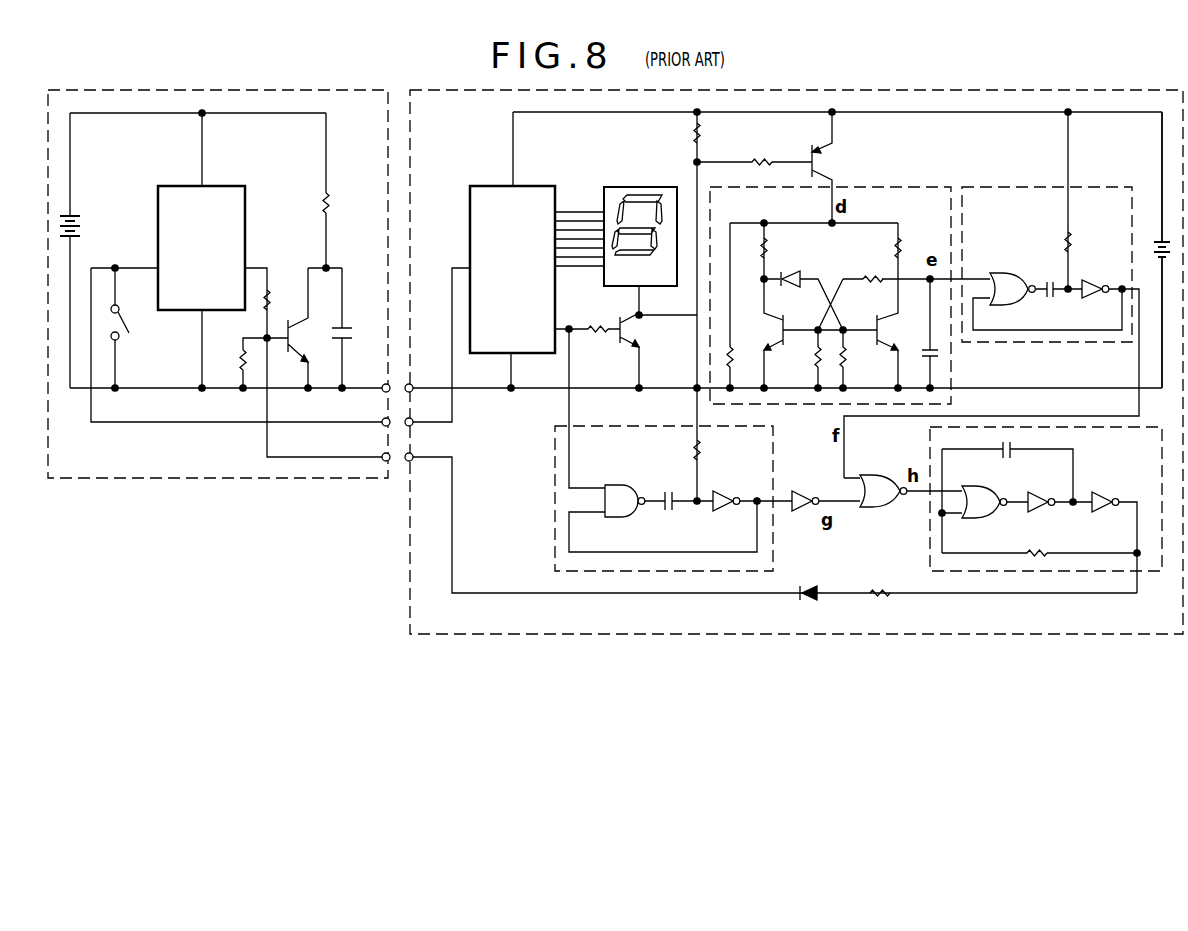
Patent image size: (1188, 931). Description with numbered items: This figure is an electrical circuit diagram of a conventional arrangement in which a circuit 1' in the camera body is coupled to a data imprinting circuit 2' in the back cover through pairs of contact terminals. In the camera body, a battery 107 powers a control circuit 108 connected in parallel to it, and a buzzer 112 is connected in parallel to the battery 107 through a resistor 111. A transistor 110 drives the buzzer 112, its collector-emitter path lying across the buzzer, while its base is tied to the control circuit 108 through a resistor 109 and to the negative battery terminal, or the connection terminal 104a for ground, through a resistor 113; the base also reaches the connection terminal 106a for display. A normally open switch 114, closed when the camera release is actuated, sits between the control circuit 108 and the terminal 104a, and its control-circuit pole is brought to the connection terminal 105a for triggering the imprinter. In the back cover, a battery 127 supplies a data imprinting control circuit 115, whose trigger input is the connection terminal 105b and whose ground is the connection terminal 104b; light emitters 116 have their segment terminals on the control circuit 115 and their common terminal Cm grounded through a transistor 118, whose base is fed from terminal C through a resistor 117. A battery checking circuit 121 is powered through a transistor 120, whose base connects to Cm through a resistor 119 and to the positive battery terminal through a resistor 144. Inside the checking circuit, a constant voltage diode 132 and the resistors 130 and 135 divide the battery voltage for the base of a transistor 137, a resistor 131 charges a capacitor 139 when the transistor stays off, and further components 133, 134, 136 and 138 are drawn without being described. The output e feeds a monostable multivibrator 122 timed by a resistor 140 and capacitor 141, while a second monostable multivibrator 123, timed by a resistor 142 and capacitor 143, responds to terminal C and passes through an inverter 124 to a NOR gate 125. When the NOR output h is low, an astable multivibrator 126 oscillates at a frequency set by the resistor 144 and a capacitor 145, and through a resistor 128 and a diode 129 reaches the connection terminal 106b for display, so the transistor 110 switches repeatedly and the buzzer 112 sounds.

The circuit 1' is at (218, 260).
The data imprinting circuit 2' is at (796, 339).
The connection terminal for ground 104a is at (383, 385).
The connection terminal for triggering a data imprinter 105a is at (383, 419).
The connection terminal for display 106a is at (383, 453).
The connection terminal for ground 104b is at (413, 388).
The connection terminal for trigger 105b is at (413, 422).
The connection terminal for display 106b is at (415, 454).
The battery 107 is at (82, 225).
The control circuit 108 is at (167, 186).
The resistor 109 is at (269, 300).
The transistor 110 is at (293, 350).
The resistor 111 is at (320, 202).
The buzzer 112 is at (348, 328).
The resistor 113 is at (241, 350).
The normally open switch 114 is at (122, 335).
The data imprinting control circuit 115 is at (494, 186).
The light emitters 116 is at (630, 187).
The resistor 117 is at (594, 326).
The transistor 118 is at (627, 344).
The resistor 119 is at (759, 157).
The transistor 120 is at (810, 152).
The battery checking circuit 121 is at (938, 187).
The monostable multivibrator 122 is at (984, 187).
The monostable multivibrator 123 is at (551, 434).
The inverter 124 is at (801, 492).
The NOR gate 125 is at (892, 474).
The astable multivibrator 126 is at (928, 555).
The battery 127 is at (1154, 240).
The resistor 128 is at (886, 597).
The diode 129 is at (810, 604).
The resistor 130 is at (768, 253).
The resistor 131 is at (900, 246).
The constant voltage diode 132 is at (802, 273).
The resistor 133 is at (868, 273).
The resistor 134 is at (813, 360).
The resistor 135 is at (848, 362).
The transistor 136 is at (784, 324).
The transistor 137 is at (876, 324).
The resistor 138 is at (732, 345).
The capacitor 139 is at (926, 342).
The resistor 140 is at (1072, 243).
The capacitor 141 is at (1046, 278).
The resistor 142 is at (694, 450).
The capacitor 143 is at (674, 512).
The resistor 144 is at (692, 136).
The capacitor 145 is at (1012, 452).